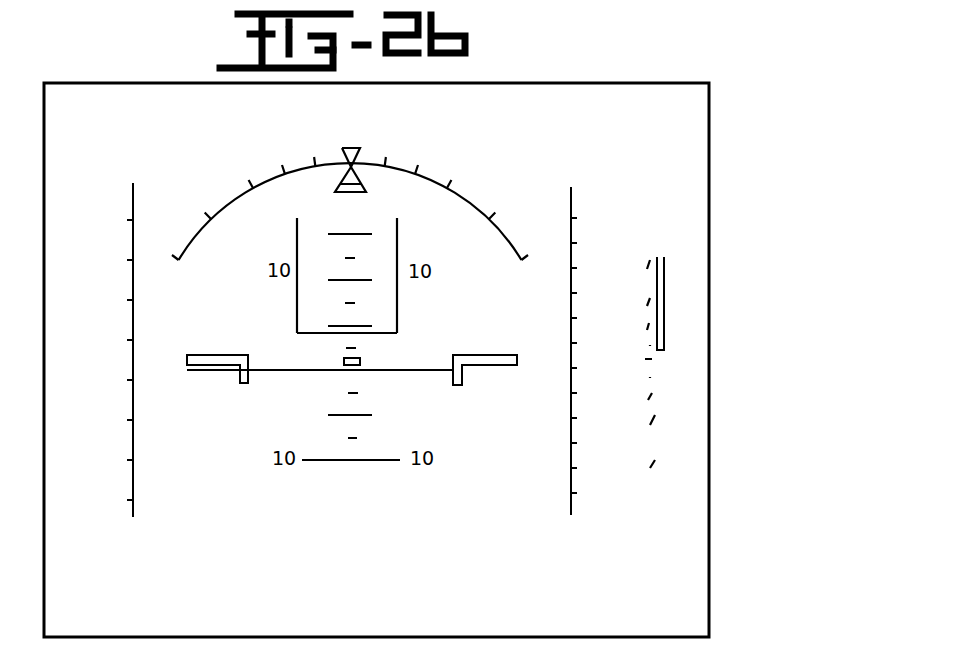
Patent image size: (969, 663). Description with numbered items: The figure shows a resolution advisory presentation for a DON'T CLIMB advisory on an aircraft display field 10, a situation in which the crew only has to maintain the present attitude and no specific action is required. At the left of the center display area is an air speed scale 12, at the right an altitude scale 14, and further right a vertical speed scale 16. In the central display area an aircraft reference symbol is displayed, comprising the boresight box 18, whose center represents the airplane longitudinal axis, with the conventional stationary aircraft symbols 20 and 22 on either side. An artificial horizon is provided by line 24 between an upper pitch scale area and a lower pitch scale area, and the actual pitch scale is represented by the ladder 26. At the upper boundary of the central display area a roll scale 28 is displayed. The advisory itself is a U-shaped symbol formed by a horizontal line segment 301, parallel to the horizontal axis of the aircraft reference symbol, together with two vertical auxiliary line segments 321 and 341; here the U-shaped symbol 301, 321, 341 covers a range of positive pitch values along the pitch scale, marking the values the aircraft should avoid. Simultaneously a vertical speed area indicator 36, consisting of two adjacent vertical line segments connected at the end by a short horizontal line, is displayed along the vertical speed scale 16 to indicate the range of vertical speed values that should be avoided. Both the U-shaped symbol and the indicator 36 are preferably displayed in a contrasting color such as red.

The head-up display field 10 is at (650, 106).
The air speed scale 12 is at (133, 187).
The altitude scale 14 is at (571, 195).
The vertical speed scale 16 is at (650, 420).
The boresight box 18 is at (344, 360).
The stationary aircraft symbol 20 is at (213, 362).
The stationary aircraft symbol 22 is at (485, 360).
The artificial horizon line 24 is at (405, 372).
The pitch scale ladder 26 is at (355, 462).
The roll scale 28 is at (405, 170).
The vertical speed area indicator 36 is at (665, 302).
The horizontal line segment 301 is at (378, 343).
The vertical auxiliary line segment 321 is at (297, 252).
The vertical auxiliary line segment 341 is at (397, 226).